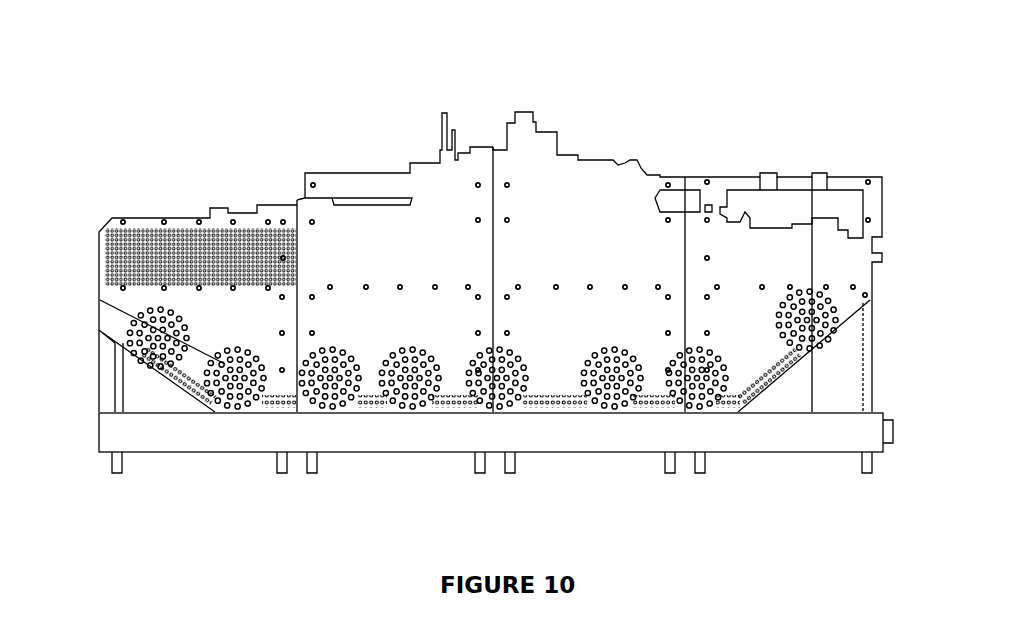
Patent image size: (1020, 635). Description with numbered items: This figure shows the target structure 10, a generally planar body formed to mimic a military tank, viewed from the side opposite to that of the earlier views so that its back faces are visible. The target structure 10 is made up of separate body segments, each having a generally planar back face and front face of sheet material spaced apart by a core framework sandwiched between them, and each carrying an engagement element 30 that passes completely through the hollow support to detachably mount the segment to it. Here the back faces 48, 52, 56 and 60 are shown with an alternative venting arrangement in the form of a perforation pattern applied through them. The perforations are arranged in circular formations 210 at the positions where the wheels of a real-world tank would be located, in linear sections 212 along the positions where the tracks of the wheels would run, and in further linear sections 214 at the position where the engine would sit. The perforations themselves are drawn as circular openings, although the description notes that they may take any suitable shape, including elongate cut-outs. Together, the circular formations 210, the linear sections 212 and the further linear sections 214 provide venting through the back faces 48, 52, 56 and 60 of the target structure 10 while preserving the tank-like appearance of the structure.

The target structure 10 is at (775, 108).
The engagement element 30 is at (870, 335).
The back face 48 is at (758, 243).
The back face 52 is at (595, 175).
The back face 56 is at (425, 175).
The back face 60 is at (208, 223).
The circular formations 210 is at (813, 312).
The linear sections 212 is at (283, 405).
The further linear sections 214 is at (253, 240).